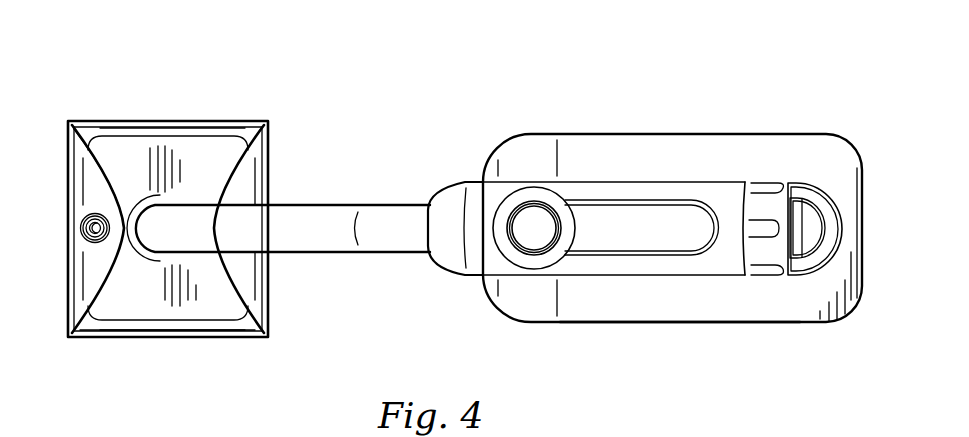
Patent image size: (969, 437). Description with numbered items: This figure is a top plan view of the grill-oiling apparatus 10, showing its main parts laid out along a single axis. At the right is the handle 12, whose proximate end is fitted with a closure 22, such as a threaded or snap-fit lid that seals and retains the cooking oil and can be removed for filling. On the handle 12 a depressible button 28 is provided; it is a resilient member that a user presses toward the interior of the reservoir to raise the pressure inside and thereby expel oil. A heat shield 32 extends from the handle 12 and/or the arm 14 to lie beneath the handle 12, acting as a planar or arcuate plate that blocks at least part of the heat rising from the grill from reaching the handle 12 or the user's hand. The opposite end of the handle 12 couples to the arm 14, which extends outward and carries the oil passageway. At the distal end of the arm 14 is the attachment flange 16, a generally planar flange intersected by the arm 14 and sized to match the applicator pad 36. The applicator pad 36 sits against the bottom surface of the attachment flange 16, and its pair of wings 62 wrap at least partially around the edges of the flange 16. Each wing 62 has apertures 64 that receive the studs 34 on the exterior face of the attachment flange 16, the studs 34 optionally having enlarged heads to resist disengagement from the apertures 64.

The grill-oiling apparatus 10 is at (584, 63).
The handle 12 is at (725, 276).
The arm 14 is at (362, 256).
The attachment flange 16 is at (215, 300).
The closure 22 is at (789, 182).
The depressible button 28 is at (530, 238).
The heat shield 32 is at (619, 324).
The studs 34 is at (88, 222).
The applicator pad 36 is at (88, 338).
The wings 62 is at (120, 157).
The apertures 64 is at (88, 244).